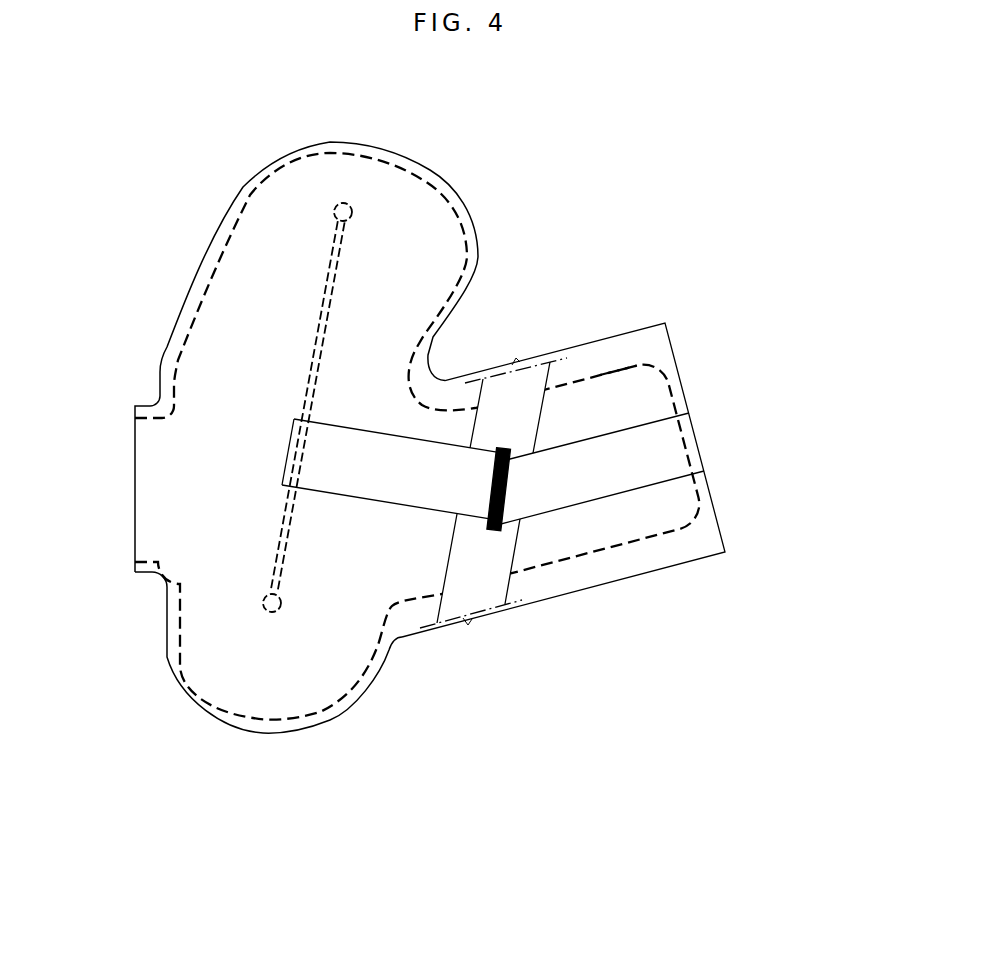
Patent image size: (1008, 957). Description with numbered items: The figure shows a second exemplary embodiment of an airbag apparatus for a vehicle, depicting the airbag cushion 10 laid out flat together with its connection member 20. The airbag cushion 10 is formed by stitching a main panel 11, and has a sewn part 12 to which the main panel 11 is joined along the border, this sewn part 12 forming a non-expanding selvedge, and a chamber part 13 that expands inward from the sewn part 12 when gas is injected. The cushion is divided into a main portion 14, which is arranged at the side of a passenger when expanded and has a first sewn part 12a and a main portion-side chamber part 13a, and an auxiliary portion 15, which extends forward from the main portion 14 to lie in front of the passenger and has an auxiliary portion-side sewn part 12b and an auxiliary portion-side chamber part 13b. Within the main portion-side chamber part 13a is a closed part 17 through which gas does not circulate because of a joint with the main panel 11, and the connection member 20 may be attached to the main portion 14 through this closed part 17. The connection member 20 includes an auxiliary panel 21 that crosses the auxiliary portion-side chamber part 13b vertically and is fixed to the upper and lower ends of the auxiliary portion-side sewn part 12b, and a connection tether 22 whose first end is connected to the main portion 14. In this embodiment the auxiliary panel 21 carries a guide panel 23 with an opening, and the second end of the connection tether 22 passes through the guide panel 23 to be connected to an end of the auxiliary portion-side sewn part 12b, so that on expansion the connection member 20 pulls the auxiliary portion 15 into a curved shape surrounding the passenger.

The airbag cushion 10 is at (330, 397).
The main panel 11 is at (447, 183).
The sewn part 12 is at (430, 544).
The first sewn part 12a is at (267, 722).
The auxiliary portion-side sewn part 12b is at (610, 372).
The chamber part 13 is at (515, 320).
The main portion-side chamber part 13a is at (298, 212).
The auxiliary portion-side chamber part 13b is at (653, 508).
The main portion 14 is at (290, 343).
The auxiliary portion 15 is at (608, 411).
The closed part 17 is at (283, 523).
The connection member 20 is at (273, 440).
The auxiliary panel 21 is at (483, 557).
The connection tether 22 is at (394, 483).
The guide panel 23 is at (503, 447).